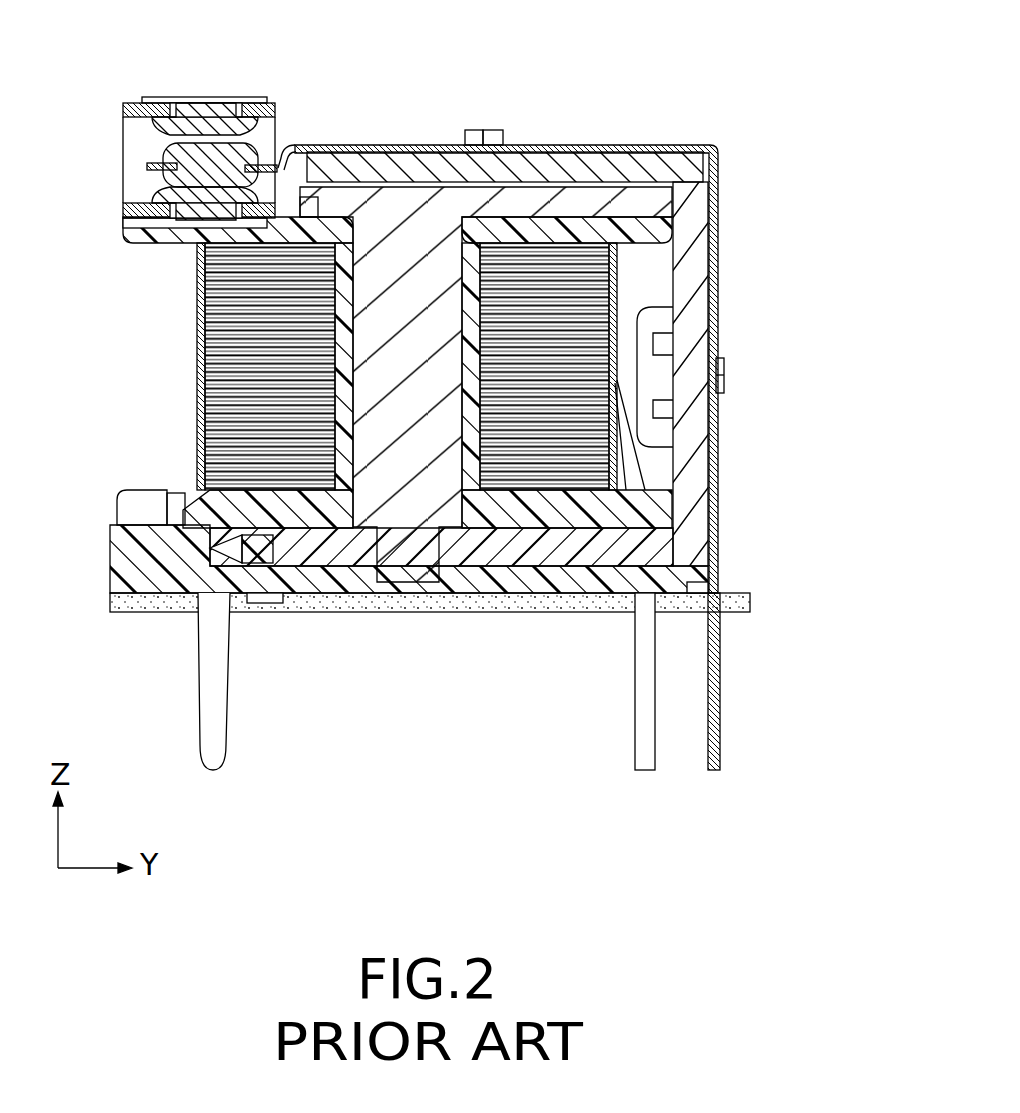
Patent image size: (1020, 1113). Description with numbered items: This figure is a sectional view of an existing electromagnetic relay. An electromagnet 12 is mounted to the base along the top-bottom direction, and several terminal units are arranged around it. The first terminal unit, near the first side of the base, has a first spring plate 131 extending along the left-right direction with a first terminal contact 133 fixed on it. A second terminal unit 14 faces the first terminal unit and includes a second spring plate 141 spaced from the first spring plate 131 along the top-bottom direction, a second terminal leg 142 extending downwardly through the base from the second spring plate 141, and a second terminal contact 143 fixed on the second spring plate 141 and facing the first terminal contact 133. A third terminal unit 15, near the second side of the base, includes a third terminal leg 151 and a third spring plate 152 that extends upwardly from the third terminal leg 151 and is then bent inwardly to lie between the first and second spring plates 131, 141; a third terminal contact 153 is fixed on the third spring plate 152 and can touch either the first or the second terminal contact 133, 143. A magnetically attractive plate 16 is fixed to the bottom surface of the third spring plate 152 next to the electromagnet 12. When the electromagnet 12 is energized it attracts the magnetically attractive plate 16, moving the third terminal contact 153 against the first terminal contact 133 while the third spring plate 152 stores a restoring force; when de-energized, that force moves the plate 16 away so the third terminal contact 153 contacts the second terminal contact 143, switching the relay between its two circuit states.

The electromagnet 12 is at (205, 382).
The first spring plate 131 is at (123, 209).
The first terminal contact 133 is at (197, 215).
The second spring plate 141 is at (133, 103).
The second terminal contact 143 is at (205, 122).
The third terminal contact 153 is at (228, 157).
The third spring plate 152 is at (399, 148).
The magnetically attractive plate 16 is at (566, 170).
The second terminal unit 14 is at (430, 673).
The second terminal leg 142 is at (228, 723).
The third terminal unit 15 is at (558, 438).
The third terminal leg 151 is at (720, 693).